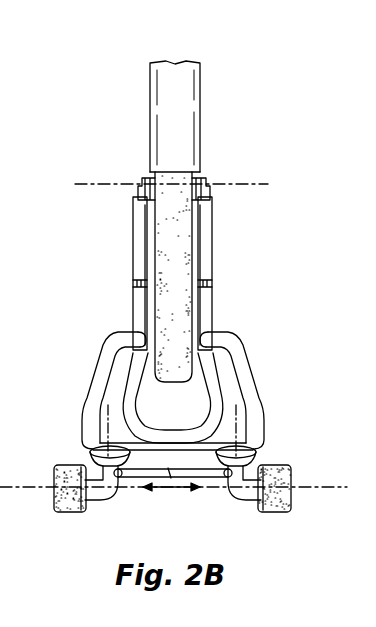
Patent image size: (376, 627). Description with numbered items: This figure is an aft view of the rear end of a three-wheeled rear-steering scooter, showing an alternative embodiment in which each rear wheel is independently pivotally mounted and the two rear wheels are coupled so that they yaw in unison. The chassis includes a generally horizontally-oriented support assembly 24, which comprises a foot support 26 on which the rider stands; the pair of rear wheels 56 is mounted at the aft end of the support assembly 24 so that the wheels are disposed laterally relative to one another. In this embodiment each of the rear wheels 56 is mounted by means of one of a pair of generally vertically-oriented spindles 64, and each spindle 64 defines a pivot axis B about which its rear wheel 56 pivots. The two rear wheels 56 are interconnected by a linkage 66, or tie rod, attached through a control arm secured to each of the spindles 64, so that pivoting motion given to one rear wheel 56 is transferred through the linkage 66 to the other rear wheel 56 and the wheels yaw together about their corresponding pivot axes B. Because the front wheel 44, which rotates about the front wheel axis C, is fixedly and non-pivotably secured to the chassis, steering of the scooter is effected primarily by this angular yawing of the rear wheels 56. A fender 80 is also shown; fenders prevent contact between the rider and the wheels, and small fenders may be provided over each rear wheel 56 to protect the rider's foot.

The fender 80 is at (200, 92).
The front wheel 44 is at (178, 232).
The support assembly 24 is at (199, 387).
The foot support 26 is at (237, 350).
The rear wheels 56 is at (62, 512).
The spindles 64 is at (97, 490).
The linkage 66 is at (175, 472).
The pivot axis B is at (106, 421).
The front wheel axis C is at (86, 183).